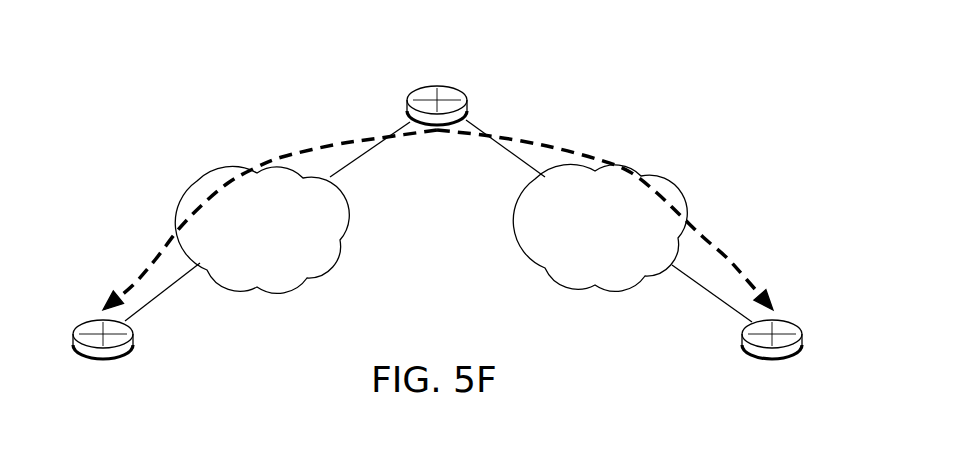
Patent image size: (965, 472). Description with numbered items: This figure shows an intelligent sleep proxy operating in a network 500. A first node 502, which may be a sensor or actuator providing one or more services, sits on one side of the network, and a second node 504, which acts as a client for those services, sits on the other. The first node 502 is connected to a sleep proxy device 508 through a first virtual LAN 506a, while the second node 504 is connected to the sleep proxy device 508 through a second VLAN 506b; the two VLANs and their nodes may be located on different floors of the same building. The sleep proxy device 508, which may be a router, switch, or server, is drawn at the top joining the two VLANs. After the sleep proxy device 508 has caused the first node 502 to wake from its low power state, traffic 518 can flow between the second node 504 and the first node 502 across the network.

The network 500 is at (875, 62).
The first node 502 is at (103, 356).
The second node 504 is at (772, 356).
The first virtual LAN 506a is at (240, 255).
The second VLAN 506b is at (578, 253).
The sleep proxy device 508 is at (436, 148).
The traffic 518 is at (559, 140).